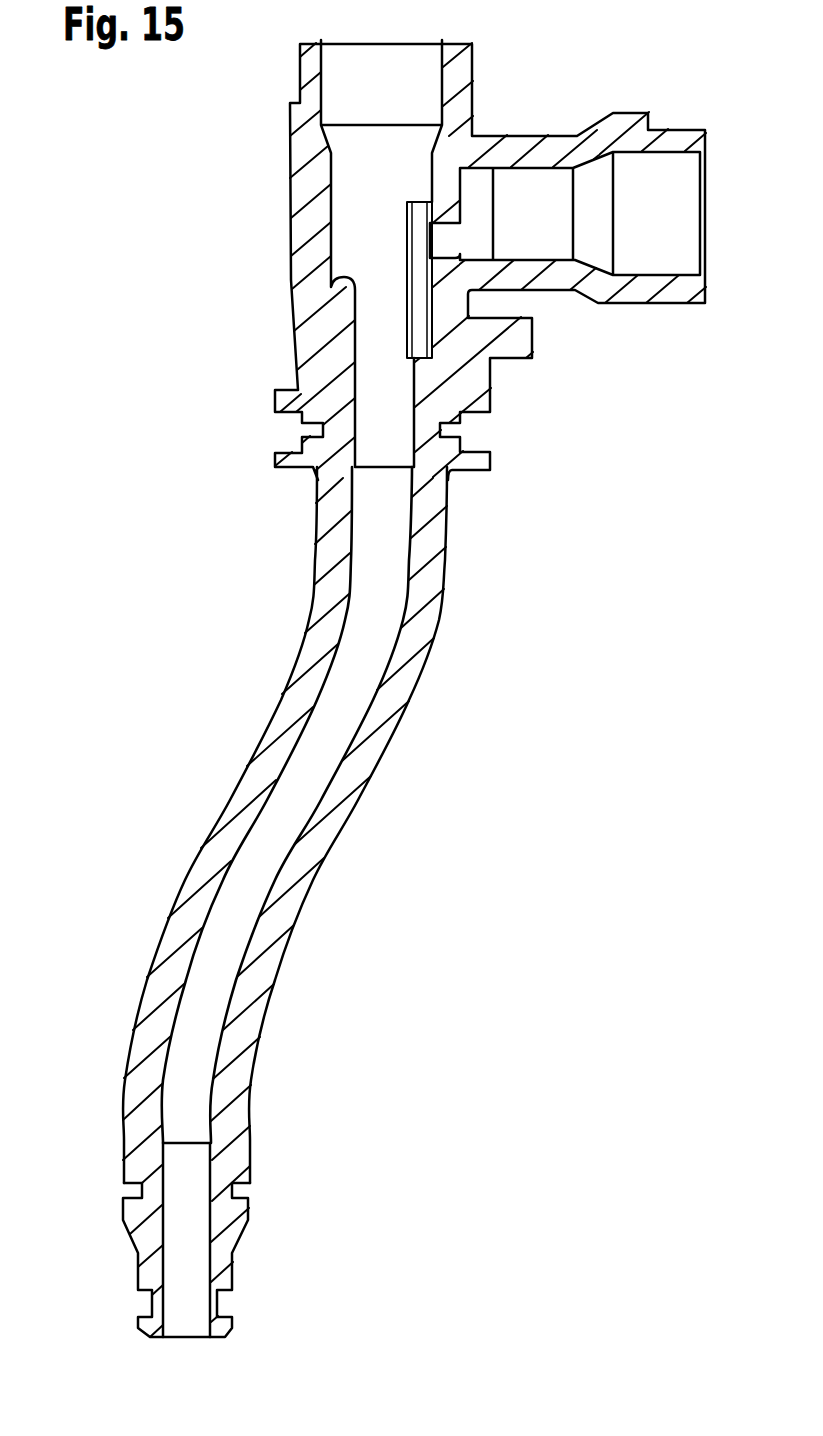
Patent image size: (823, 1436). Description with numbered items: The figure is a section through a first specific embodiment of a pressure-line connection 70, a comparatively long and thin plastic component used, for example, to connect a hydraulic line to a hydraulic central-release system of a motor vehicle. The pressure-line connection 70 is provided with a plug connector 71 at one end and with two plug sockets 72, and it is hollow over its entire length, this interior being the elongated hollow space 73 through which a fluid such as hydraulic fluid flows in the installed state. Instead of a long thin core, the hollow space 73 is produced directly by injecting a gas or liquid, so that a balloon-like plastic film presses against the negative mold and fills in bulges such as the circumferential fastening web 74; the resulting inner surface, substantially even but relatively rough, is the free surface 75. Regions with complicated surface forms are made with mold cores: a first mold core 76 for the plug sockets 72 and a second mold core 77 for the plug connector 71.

The pressure-line connection 70 is at (190, 607).
The plug connector 71 is at (133, 1252).
The plug sockets 72 is at (305, 150).
The hollow space 73 is at (367, 660).
The circumferential fastening web 74 is at (275, 456).
The free surface 75 is at (297, 797).
The first mold core 76 is at (355, 204).
The second mold core 77 is at (185, 1254).